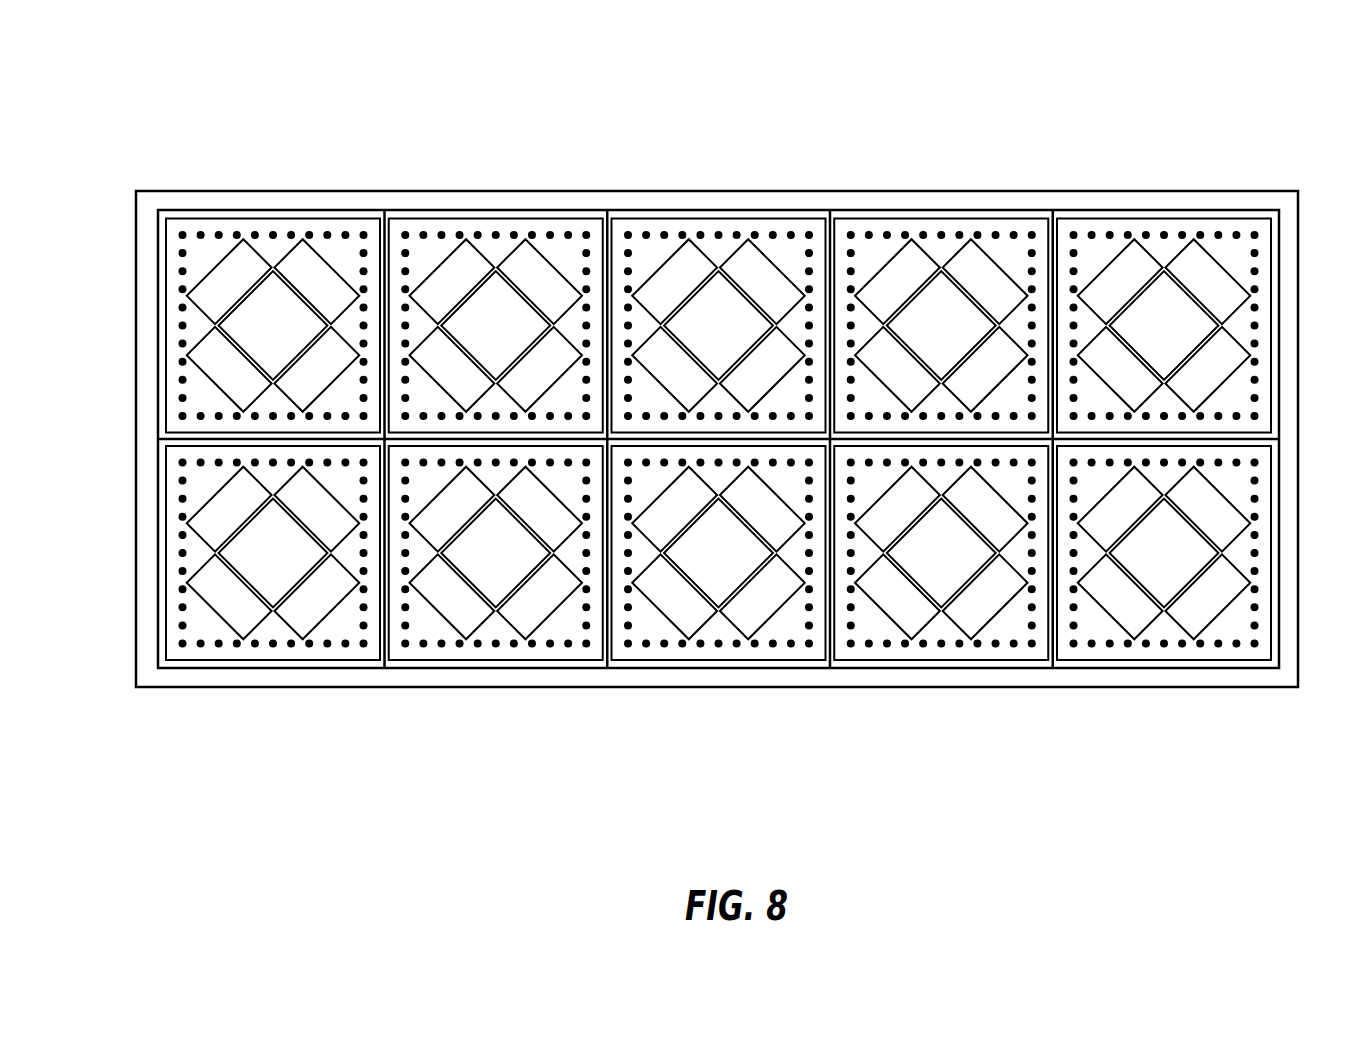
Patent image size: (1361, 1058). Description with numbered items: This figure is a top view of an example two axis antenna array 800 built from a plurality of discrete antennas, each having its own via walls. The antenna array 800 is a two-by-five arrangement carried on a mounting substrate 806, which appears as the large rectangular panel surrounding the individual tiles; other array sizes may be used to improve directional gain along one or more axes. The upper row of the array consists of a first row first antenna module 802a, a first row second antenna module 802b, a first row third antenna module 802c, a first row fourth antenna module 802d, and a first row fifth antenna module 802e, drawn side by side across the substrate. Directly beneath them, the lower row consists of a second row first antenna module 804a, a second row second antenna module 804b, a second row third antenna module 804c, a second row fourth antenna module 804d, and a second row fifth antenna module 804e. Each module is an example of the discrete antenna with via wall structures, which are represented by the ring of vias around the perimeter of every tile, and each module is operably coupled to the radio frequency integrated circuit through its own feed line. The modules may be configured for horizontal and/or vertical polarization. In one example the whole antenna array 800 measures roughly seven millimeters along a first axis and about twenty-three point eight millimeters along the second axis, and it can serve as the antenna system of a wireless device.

The two axis antenna array 800 is at (152, 64).
The first row first antenna module 802a is at (342, 252).
The first row second antenna module 802b is at (565, 252).
The first row third antenna module 802c is at (788, 252).
The first row fourth antenna module 802d is at (1010, 252).
The first row fifth antenna module 802e is at (1233, 252).
The second row first antenna module 804a is at (200, 630).
The second row second antenna module 804b is at (432, 632).
The second row third antenna module 804c is at (650, 632).
The second row fourth antenna module 804d is at (862, 640).
The second row fifth antenna module 804e is at (1090, 636).
The mounting substrate 806 is at (717, 687).